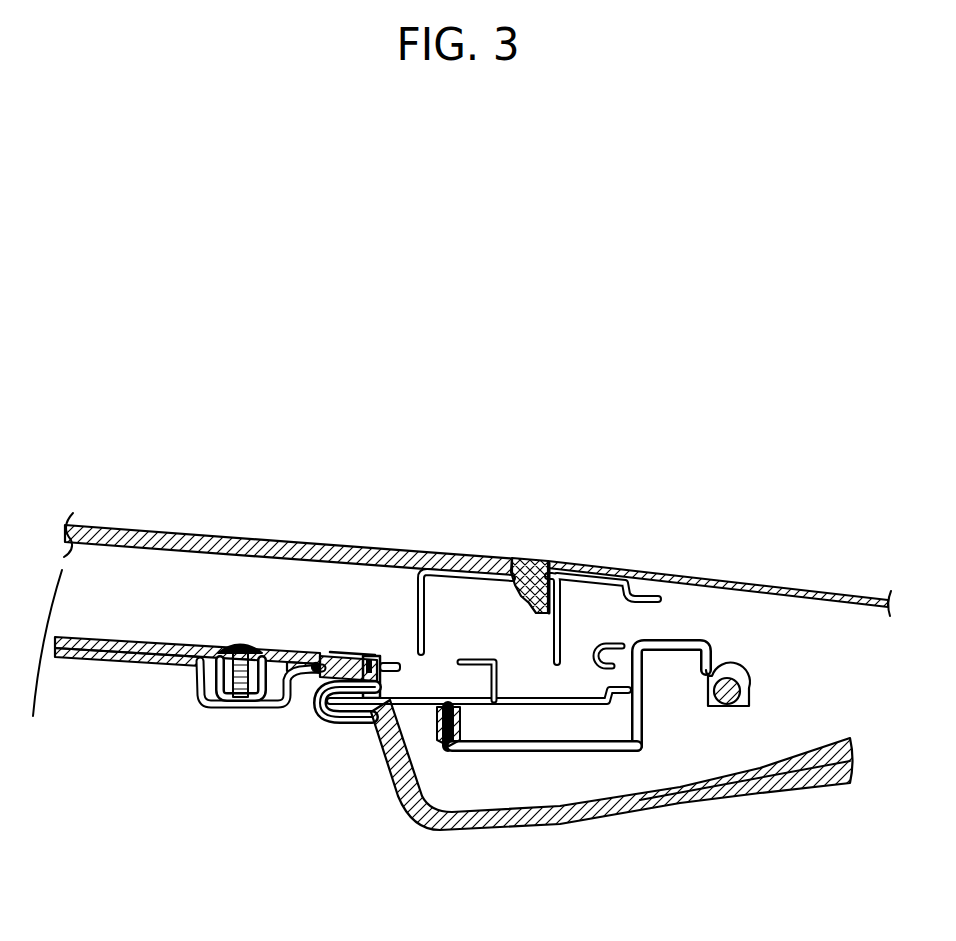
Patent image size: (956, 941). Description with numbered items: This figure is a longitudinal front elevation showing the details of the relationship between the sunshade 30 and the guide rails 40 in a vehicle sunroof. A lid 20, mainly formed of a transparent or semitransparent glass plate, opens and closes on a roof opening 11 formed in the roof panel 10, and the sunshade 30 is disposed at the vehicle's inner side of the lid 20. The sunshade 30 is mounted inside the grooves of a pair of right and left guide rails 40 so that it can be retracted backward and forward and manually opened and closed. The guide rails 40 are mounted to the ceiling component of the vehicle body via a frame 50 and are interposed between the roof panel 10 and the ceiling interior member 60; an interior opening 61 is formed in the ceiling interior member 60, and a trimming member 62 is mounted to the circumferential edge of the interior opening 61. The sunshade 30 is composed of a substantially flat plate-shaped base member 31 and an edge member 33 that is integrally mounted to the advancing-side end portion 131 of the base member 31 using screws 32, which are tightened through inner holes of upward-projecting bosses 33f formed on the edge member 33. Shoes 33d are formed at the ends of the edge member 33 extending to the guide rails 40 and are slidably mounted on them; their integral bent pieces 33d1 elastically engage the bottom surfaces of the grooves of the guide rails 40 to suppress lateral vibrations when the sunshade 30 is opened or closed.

The roof panel 10 is at (724, 584).
The roof opening 11 is at (511, 561).
The lid 20 is at (242, 526).
The sunshade 30 is at (188, 665).
The base member 31 is at (141, 637).
The screws 32 is at (240, 643).
The edge member 33 is at (188, 694).
The shoes 33d is at (333, 655).
The bent pieces 33d1 is at (383, 672).
The bosses 33f is at (212, 694).
The guide rails 40 is at (412, 650).
The frame 50 is at (645, 737).
The ceiling interior member 60 is at (506, 831).
The interior opening 61 is at (318, 730).
The trimming member 62 is at (314, 712).
The advancing-side end portion 131 is at (265, 648).